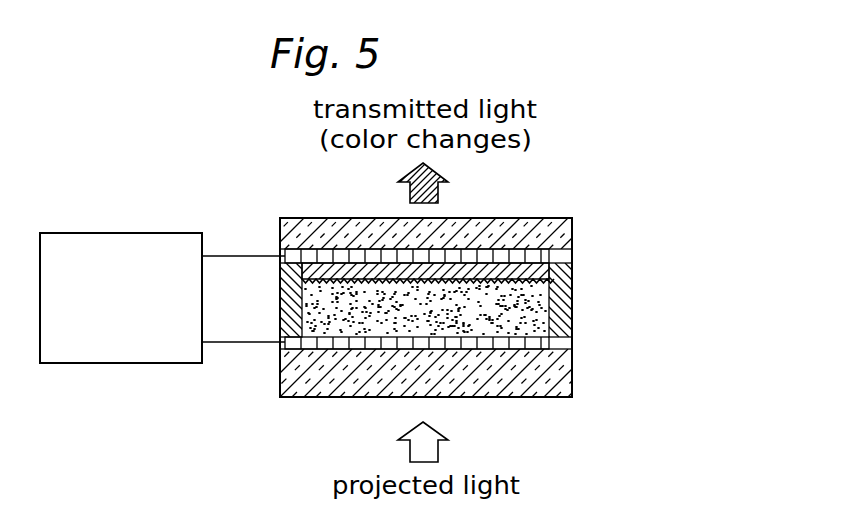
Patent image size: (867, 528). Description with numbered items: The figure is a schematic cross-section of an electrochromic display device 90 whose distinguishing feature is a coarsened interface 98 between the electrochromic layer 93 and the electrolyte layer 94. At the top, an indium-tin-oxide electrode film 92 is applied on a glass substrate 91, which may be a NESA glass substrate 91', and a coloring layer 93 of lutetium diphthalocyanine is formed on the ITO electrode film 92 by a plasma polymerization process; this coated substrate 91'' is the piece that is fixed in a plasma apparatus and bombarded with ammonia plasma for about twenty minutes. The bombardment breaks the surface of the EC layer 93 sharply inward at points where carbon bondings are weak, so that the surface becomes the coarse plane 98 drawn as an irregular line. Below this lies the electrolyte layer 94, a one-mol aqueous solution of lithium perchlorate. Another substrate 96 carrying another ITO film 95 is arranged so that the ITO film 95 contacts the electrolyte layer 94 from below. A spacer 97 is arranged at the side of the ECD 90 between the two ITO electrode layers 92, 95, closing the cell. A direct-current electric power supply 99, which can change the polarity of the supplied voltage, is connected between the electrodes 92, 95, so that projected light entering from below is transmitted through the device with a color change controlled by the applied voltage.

The electrochromic display device 90 is at (306, 210).
The glass substrate 91 is at (444, 207).
The ITO electrode film 92 is at (545, 252).
The electrochromic layer 93 is at (543, 269).
The coarsened interface 98 is at (528, 285).
The electrolyte layer 94 is at (538, 319).
The spacer 97 is at (290, 312).
The ITO film 95 is at (533, 345).
The substrate 96 is at (520, 380).
The direct-current electric power supply 99 is at (123, 233).
The NESA glass substrate 91' is at (671, 195).
The substrate 91'' is at (728, 220).